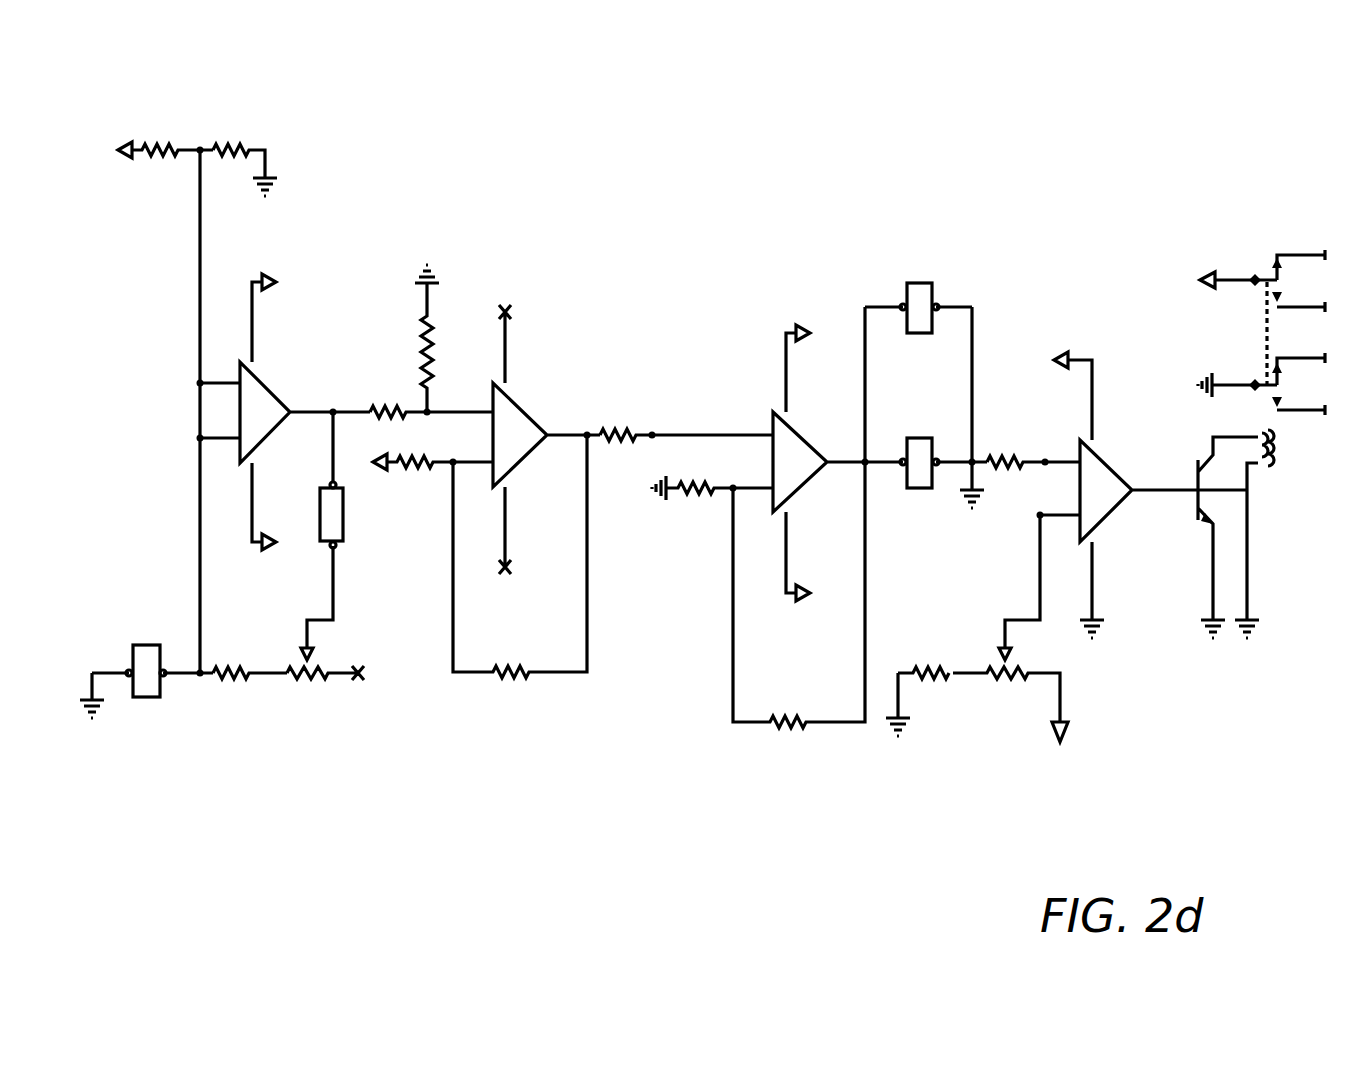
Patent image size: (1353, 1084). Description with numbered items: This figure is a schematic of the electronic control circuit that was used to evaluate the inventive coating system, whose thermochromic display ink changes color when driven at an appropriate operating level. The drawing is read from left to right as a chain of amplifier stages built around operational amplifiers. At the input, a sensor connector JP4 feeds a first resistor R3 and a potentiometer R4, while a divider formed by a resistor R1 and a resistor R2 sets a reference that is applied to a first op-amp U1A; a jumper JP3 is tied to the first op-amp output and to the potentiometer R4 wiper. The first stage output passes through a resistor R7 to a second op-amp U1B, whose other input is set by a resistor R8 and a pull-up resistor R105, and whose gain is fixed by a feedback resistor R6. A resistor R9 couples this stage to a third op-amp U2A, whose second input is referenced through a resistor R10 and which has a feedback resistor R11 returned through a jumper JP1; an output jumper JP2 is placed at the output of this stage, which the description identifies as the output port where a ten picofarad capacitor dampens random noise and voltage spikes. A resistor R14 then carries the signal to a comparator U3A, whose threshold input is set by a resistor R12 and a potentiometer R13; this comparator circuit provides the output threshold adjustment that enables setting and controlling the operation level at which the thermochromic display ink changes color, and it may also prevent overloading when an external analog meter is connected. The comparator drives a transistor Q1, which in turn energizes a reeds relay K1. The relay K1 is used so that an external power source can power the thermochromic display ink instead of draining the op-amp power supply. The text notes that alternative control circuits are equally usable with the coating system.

The resistor R1 4.7K R1 is at (156, 146).
The resistor R2 4.7K R2 is at (244, 162).
The resistor R3 4.7K R3 is at (247, 667).
The potentiometer R4 20kOhm R4 is at (321, 652).
The resistor R6 22K R6 is at (520, 567).
The resistor R7 10K R7 is at (431, 408).
The resistor R8 10K R8 is at (424, 462).
The resistor R9 1K R9 is at (679, 432).
The resistor R10 1K R10 is at (706, 485).
The resistor R11 100KOhm R11 is at (799, 528).
The resistor R12 4.7K R12 is at (915, 701).
The potentiometer R13 20kOhm R13 is at (1013, 641).
The resistor R14 1K R14 is at (1033, 460).
The resistor R105 100K R105 is at (421, 323).
The op-amp U1A TLE2064 U1A is at (285, 415).
The op-amp U1B TLE2064 U1B is at (540, 438).
The op-amp U2A TLE2064 U2A is at (831, 464).
The comparator U3A LM311 U3A is at (1117, 499).
The jumper JP1 is at (918, 310).
The output jumper JP2 is at (925, 419).
The pot jumper JP3 is at (329, 535).
The sensor connector JP4 is at (145, 684).
The NPN transistor Q1 is at (1215, 537).
The SPDT relay K1 is at (1253, 357).